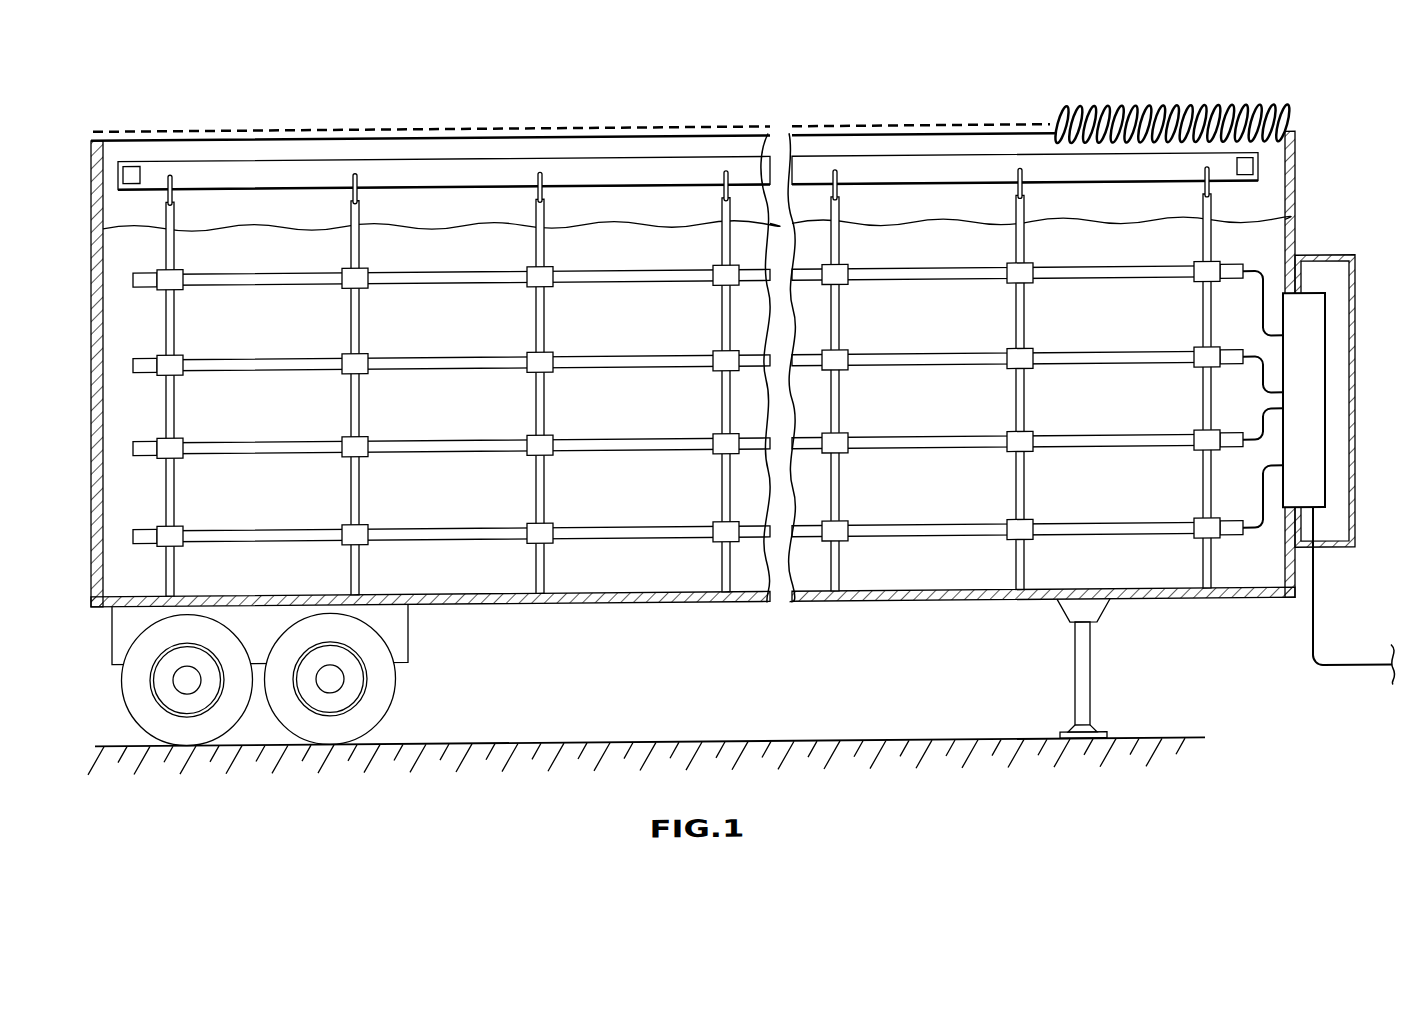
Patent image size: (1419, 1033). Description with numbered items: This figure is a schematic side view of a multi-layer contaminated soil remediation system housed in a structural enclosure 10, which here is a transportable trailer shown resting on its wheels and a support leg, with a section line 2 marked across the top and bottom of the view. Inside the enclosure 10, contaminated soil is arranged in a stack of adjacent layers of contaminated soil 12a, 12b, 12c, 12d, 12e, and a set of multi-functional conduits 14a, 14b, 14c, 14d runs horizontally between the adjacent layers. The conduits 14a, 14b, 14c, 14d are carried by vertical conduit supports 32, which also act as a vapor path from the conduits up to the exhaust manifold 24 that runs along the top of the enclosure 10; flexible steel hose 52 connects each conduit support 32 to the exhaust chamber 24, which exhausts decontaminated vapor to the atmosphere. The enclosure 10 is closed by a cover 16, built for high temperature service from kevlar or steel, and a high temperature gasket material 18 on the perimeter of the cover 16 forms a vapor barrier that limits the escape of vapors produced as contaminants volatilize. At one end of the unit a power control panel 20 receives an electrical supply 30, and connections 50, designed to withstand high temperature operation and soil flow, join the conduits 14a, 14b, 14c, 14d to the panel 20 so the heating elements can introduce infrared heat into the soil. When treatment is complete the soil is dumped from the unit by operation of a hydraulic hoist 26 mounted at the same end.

The section line 2- 2 is at (446, 96).
The structural enclosure 10 is at (623, 603).
The layer of contaminated soil 12a is at (612, 577).
The layer of contaminated soil 12b is at (612, 503).
The layer of contaminated soil 12c is at (612, 417).
The layer of contaminated soil 12d is at (612, 332).
The layer of contaminated soil 12e is at (612, 259).
The multi-functional conduit 14a is at (450, 526).
The multi-functional conduit 14b is at (420, 438).
The multi-functional conduit 14c is at (487, 355).
The multi-functional conduit 14d is at (405, 281).
The cover 16 is at (1181, 109).
The high temperature gasket material 18 is at (922, 126).
The power control panel 20 is at (1313, 298).
The exhaust manifold 24 is at (284, 157).
The hydraulic hoist 26 is at (1355, 295).
The electrical supply 30 is at (1358, 671).
The conduit support 32 is at (176, 321).
The connection 50 is at (1260, 305).
The flexible steel hose 52 is at (171, 170).